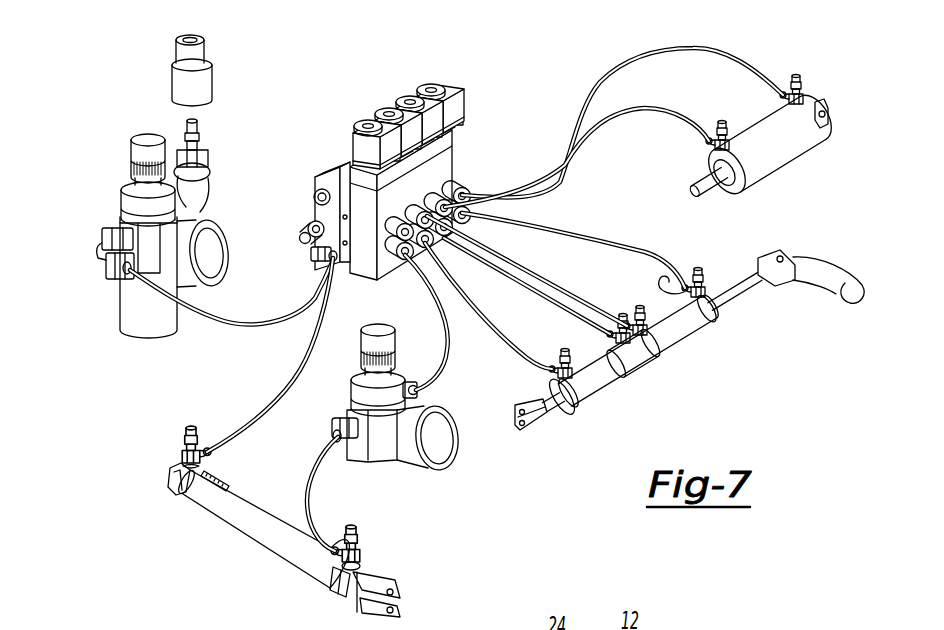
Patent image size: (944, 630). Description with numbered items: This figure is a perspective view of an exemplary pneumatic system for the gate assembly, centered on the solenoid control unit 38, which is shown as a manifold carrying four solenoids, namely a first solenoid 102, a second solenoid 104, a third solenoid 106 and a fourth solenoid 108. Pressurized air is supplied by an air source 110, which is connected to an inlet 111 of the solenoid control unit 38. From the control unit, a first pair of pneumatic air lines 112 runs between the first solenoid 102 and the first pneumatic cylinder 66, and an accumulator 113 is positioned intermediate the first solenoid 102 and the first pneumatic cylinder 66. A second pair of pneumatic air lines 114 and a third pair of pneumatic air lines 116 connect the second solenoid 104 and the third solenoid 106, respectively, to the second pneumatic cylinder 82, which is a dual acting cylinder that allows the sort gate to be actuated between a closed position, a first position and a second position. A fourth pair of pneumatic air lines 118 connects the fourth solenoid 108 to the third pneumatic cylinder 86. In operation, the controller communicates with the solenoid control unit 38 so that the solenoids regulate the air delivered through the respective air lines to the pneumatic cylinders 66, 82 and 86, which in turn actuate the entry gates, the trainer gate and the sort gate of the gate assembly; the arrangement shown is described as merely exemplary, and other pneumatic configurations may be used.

The solenoid control unit 38 is at (387, 156).
The first pneumatic cylinder 66 is at (250, 523).
The second pneumatic cylinder 82 is at (670, 336).
The third pneumatic cylinder 86 is at (770, 150).
The first solenoid 102 is at (368, 190).
The second solenoid 104 is at (410, 140).
The third solenoid 106 is at (398, 148).
The fourth solenoid 108 is at (445, 153).
The air source 110 is at (142, 314).
The inlet 111 is at (320, 262).
The first pair of pneumatic air lines 112 is at (243, 433).
The accumulator 113 is at (378, 445).
The second pair of pneumatic air lines 114 is at (510, 348).
The third pair of pneumatic air lines 116 is at (547, 280).
The fourth pair of pneumatic air lines 118 is at (673, 108).